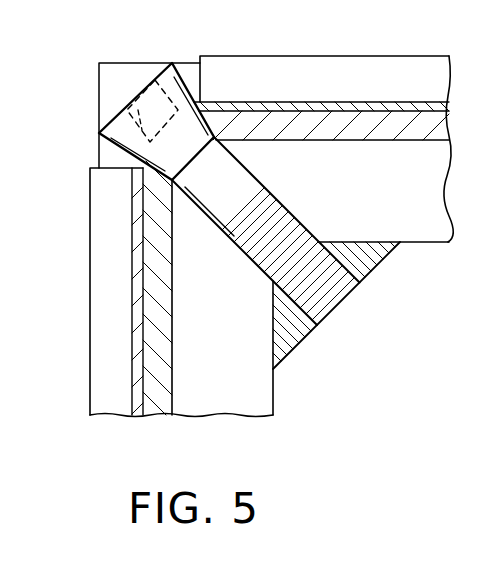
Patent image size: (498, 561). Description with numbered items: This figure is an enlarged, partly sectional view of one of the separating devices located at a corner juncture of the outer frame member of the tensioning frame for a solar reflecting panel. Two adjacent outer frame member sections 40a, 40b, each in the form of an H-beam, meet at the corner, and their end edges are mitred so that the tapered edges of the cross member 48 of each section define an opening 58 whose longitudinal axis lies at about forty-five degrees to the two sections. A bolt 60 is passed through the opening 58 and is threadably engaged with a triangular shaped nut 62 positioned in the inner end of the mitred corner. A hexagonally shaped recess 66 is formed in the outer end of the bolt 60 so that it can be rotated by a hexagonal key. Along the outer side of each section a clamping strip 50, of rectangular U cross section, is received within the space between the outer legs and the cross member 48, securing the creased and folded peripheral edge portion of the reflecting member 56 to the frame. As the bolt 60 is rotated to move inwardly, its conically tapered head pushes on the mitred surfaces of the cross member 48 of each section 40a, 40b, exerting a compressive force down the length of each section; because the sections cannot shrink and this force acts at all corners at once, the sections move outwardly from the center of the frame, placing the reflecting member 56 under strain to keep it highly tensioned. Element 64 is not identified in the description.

The outer frame member section 40a is at (415, 204).
The outer frame member section 40b is at (256, 378).
The cross member 48 is at (277, 122).
The clamping strip 50 is at (225, 56).
The reflecting member 56 is at (137, 62).
The opening 58 is at (203, 122).
The bolt 60 is at (223, 231).
The triangular shaped nut 62 is at (372, 270).
The sealing strip 64 is at (140, 174).
The hexagonally shaped recess 66 is at (138, 105).